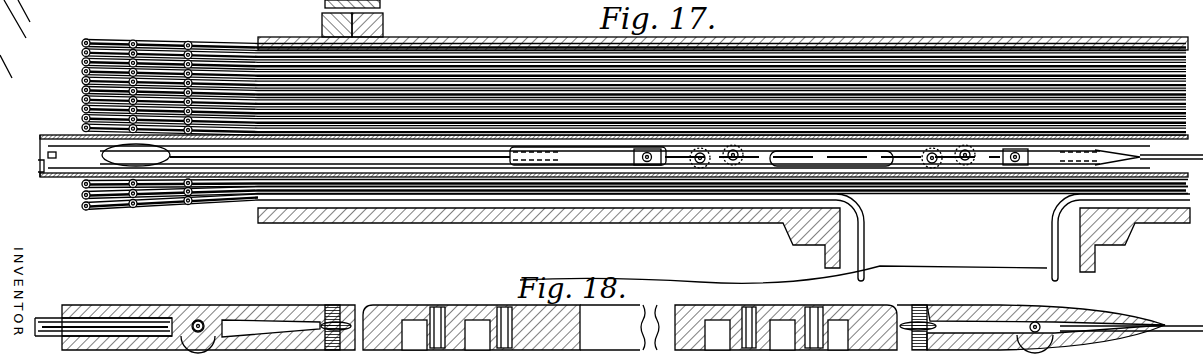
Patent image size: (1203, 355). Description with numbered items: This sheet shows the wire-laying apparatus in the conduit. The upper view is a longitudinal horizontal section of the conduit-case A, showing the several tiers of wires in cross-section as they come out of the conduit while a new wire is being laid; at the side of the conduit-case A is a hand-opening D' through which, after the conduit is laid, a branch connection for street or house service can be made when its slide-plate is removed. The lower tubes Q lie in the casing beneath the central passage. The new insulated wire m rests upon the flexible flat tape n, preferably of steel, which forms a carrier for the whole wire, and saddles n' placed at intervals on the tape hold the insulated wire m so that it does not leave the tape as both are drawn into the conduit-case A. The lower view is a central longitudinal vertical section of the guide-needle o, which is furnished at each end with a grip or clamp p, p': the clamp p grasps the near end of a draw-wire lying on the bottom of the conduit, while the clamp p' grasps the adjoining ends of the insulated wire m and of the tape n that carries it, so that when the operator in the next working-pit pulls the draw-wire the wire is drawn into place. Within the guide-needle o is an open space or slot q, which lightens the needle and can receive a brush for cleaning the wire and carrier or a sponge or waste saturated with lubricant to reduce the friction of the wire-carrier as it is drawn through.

In FIG. 17, the conduit-case A is at (500, 38).
In FIG. 17, the insulated wire m is at (355, 153).
In FIG. 17, the saddles n' is at (574, 151).
In FIG. 17, the flexible flat tape n is at (22, 168).
In FIG. 17, the lower tubes Q is at (621, 194).
In FIG. 17, the grip or clamp p' is at (587, 158).
In FIG. 18, the grip or clamp p' is at (195, 318).
In FIG. 17, the guide-needle o is at (832, 156).
In FIG. 18, the guide-needle o is at (778, 327).
In FIG. 17, the open space or slot q is at (831, 159).
In FIG. 18, the open space or slot q is at (619, 327).
In FIG. 17, the grip or clamp p is at (1103, 154).
In FIG. 18, the grip or clamp p is at (1050, 315).
In FIG. 17, the hand-opening D' is at (724, 235).